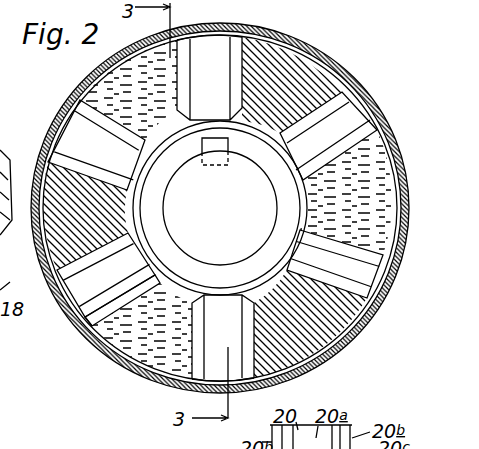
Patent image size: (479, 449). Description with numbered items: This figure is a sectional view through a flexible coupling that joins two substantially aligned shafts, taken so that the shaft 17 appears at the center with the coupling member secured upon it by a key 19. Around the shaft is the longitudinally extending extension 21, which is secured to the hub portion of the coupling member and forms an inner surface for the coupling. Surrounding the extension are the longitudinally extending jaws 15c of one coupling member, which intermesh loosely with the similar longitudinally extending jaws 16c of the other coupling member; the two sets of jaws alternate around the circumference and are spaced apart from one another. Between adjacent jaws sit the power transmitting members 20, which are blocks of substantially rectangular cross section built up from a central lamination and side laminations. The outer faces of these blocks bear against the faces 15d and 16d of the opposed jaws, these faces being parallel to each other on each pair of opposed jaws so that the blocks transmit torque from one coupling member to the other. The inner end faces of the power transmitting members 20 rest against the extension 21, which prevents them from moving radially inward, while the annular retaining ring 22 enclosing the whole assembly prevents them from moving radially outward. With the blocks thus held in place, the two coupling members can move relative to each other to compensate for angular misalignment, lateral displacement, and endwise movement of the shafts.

The longitudinally extending jaws 15c is at (117, 87).
The faces 15d is at (88, 332).
The longitudinally extending jaws 16c is at (277, 60).
The faces 16d is at (85, 297).
The shaft 17 is at (220, 208).
The keys 19 is at (229, 150).
The power transmitting members 20 is at (217, 33).
The longitudinally extending extension 21 is at (163, 273).
The annular retaining ring 22 is at (267, 28).